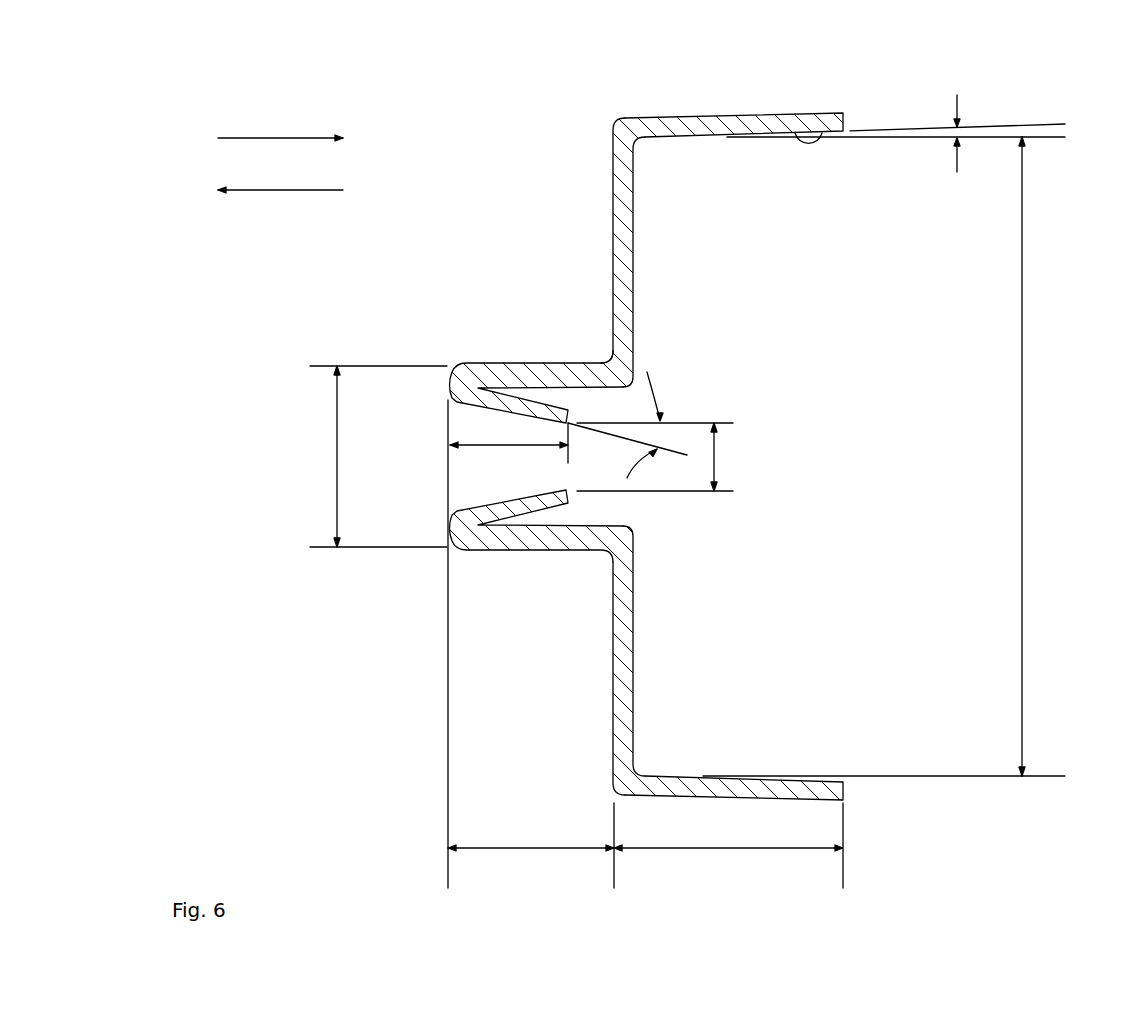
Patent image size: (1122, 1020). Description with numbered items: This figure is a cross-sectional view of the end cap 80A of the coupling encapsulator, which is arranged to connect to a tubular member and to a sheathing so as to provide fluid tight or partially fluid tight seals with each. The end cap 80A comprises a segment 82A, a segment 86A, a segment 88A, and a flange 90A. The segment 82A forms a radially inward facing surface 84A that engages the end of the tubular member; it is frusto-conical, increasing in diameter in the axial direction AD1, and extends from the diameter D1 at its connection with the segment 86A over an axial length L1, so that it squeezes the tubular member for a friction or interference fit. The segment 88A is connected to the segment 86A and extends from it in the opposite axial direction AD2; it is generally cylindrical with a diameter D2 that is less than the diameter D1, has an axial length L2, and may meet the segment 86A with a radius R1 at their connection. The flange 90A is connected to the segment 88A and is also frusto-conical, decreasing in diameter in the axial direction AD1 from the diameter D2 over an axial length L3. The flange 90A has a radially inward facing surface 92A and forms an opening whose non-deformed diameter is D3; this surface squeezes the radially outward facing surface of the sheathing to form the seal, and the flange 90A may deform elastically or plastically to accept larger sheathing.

The end cap 80A is at (588, 44).
The segment 82A is at (738, 113).
The radially inward facing surface 84A is at (820, 138).
The segment 86A is at (612, 205).
The segment 88A is at (585, 551).
The flange 90A is at (468, 506).
The radially inward facing surface 92A is at (555, 490).
The radius R1 is at (608, 360).
The axial direction AD1 is at (258, 138).
The axial direction AD2 is at (278, 190).
The diameter D1 is at (1022, 420).
The diameter D2 is at (337, 447).
The diameter D3 is at (714, 455).
The length L1 is at (735, 848).
The axial length L2 is at (548, 848).
The length L3 is at (515, 447).